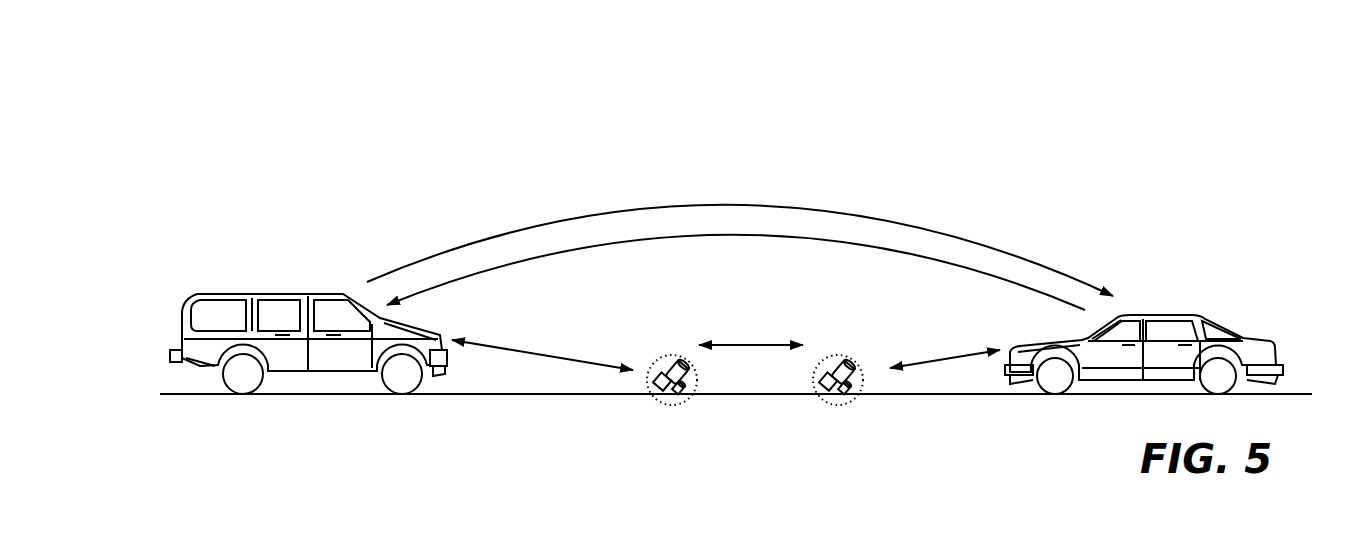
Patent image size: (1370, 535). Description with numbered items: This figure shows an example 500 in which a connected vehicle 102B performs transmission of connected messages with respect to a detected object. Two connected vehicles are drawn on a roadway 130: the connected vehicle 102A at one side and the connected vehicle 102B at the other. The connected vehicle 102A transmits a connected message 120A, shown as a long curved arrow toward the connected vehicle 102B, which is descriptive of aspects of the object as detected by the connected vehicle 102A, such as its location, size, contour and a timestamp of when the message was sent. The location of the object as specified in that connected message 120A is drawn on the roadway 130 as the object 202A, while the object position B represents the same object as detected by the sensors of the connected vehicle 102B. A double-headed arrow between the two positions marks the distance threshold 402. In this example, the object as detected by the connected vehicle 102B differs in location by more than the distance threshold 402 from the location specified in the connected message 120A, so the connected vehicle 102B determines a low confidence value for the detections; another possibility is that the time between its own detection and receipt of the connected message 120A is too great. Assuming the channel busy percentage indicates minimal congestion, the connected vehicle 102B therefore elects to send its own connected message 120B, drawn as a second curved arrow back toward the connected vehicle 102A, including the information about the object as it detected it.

The example 500 is at (262, 132).
The connected vehicle 102A is at (1133, 307).
The connected vehicle 102B is at (278, 287).
The connected message 120A is at (703, 264).
The connected message 120B is at (703, 204).
The roadway 130 is at (1290, 393).
The detected object 202A is at (812, 432).
The roadside sensor unit B is at (662, 432).
The distance threshold 402 is at (731, 334).